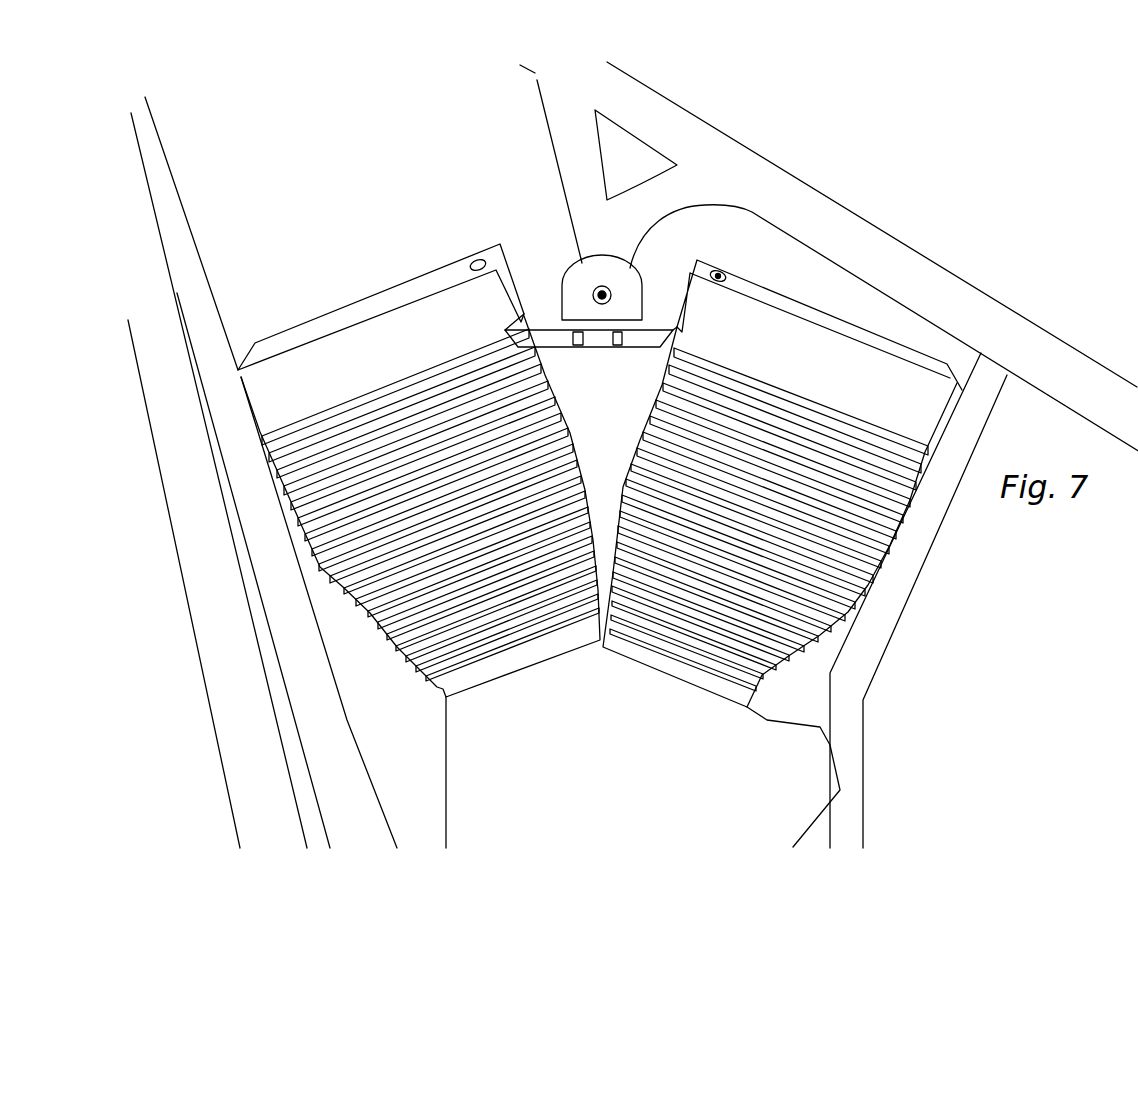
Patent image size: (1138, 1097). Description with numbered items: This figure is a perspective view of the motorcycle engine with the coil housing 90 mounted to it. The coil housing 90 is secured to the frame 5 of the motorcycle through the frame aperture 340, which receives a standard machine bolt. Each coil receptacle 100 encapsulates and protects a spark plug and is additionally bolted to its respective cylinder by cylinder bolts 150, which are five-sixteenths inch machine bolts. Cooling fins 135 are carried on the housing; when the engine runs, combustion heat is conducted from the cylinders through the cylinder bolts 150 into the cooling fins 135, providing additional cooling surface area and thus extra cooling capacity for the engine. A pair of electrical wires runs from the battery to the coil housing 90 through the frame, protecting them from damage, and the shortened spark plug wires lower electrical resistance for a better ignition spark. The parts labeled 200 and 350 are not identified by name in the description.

The frame 5 is at (870, 252).
The coil housing 90 is at (330, 332).
The coil receptacles 100 is at (277, 382).
The cooling fins 135 is at (667, 360).
The cylinder bolts 150 is at (476, 260).
The right grille panel 200 is at (780, 343).
The frame aperture 340 is at (607, 292).
The mounting tab 350 is at (576, 298).